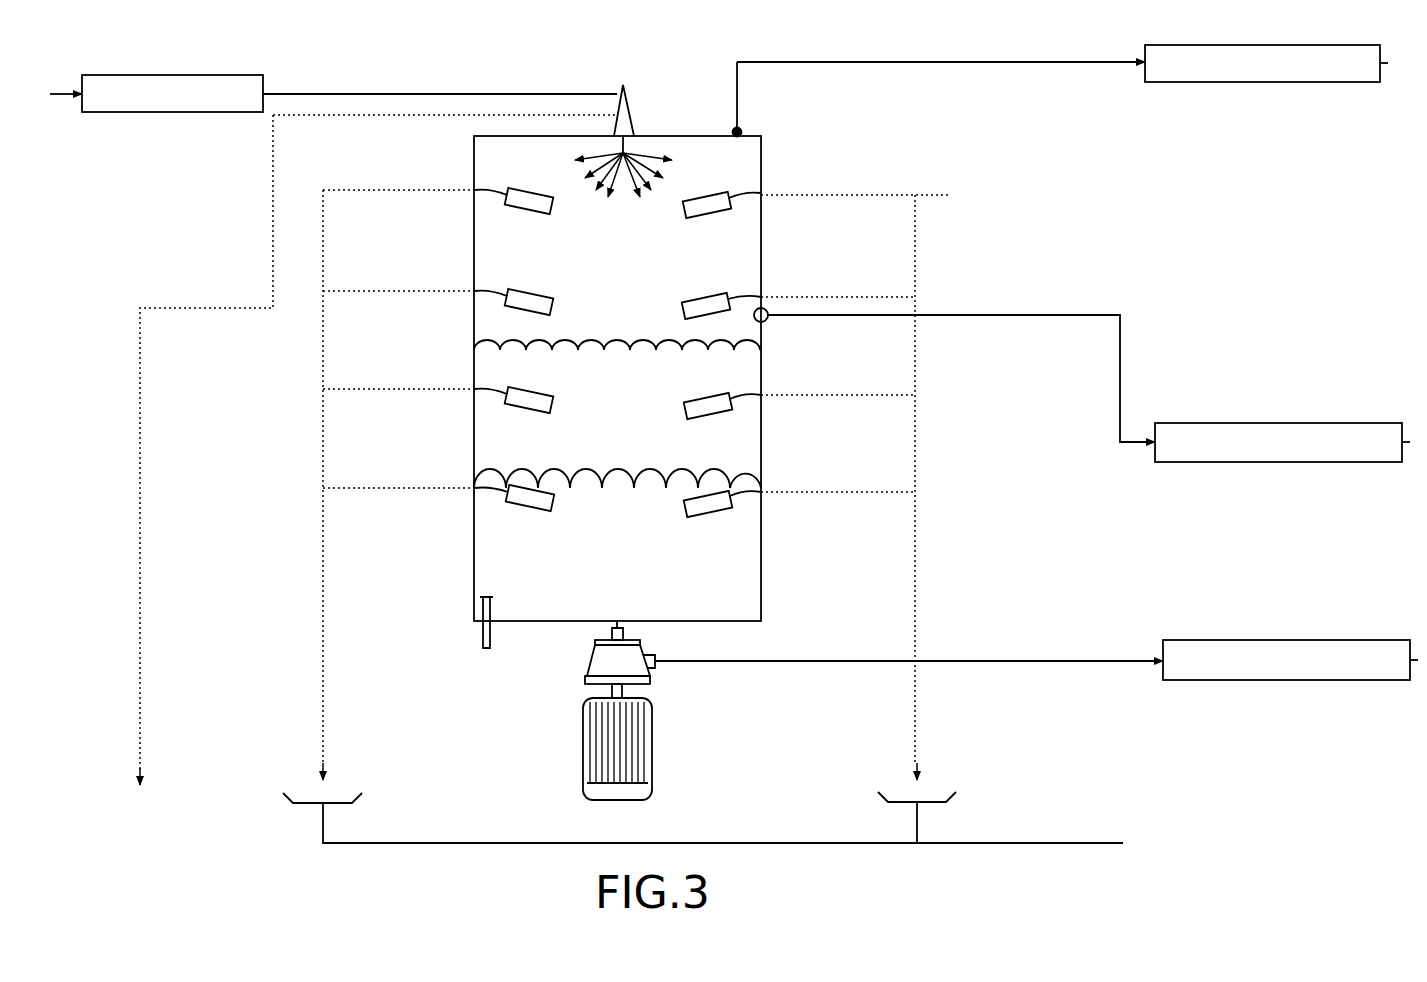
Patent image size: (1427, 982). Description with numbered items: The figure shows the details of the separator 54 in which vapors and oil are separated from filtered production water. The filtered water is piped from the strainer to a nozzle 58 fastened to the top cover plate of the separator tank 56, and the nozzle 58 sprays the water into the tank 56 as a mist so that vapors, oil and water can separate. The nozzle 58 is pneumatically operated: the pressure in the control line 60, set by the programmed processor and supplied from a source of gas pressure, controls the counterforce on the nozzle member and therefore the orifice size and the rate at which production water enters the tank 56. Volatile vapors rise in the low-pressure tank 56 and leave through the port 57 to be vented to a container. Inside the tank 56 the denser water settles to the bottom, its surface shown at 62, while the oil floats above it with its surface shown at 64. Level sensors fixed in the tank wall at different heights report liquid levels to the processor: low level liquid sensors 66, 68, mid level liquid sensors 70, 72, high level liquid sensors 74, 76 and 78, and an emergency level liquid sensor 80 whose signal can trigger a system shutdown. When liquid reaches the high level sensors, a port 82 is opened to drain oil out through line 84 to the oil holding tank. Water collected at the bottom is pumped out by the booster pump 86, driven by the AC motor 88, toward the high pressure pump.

The separator 54 is at (734, 432).
The separator tank 56 is at (762, 163).
The port 57 is at (742, 128).
The nozzle 58 is at (633, 113).
The control line 60 is at (273, 205).
The surface of the water 62 is at (597, 468).
The surface of the oil 64 is at (618, 341).
The low level liquid sensor 66 is at (530, 505).
The low level liquid sensor 68 is at (701, 510).
The mid level liquid sensor 70 is at (523, 410).
The mid level liquid sensor 72 is at (702, 418).
The high level liquid sensor 74 is at (553, 296).
The high level liquid sensor 76 is at (716, 291).
The sensor 78 is at (525, 213).
The emergency level liquid sensor 80 is at (708, 215).
The port 82 is at (768, 322).
The line 84 is at (1030, 313).
The booster pump 86 is at (597, 656).
The AC motor 88 is at (583, 752).